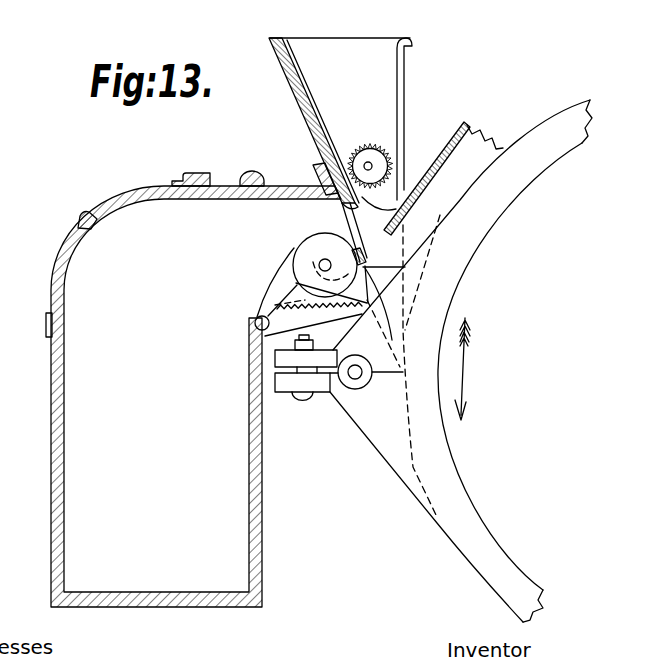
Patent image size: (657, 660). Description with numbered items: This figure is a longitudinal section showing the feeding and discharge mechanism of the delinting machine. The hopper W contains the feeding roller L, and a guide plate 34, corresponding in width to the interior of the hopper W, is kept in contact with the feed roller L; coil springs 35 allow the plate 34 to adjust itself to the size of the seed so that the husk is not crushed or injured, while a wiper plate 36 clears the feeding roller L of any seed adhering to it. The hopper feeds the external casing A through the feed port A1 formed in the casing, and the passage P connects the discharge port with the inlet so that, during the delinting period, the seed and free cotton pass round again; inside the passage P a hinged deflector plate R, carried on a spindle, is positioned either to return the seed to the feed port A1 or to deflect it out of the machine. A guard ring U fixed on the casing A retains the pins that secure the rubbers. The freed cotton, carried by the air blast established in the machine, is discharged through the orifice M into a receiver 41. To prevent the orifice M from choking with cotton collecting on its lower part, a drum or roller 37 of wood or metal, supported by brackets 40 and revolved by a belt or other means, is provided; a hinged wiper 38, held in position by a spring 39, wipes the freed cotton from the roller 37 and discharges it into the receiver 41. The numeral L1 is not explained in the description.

The guide plate 34 is at (320, 117).
The coil springs 35 is at (338, 162).
The wiper plate 36 is at (379, 212).
The drum or roller 37 is at (325, 265).
The hinged wiper 38 is at (278, 284).
The spring 39 is at (308, 318).
The brackets 40 is at (325, 318).
The receiver 41 is at (193, 389).
The hopper W is at (341, 119).
The feeding roller L is at (374, 168).
The shaft journal L1 is at (374, 158).
The orifice M is at (317, 219).
The passage P is at (430, 165).
The deflector plate R is at (461, 225).
The guard ring U is at (515, 361).
The external casing A is at (547, 125).
The feed port A1 is at (426, 418).